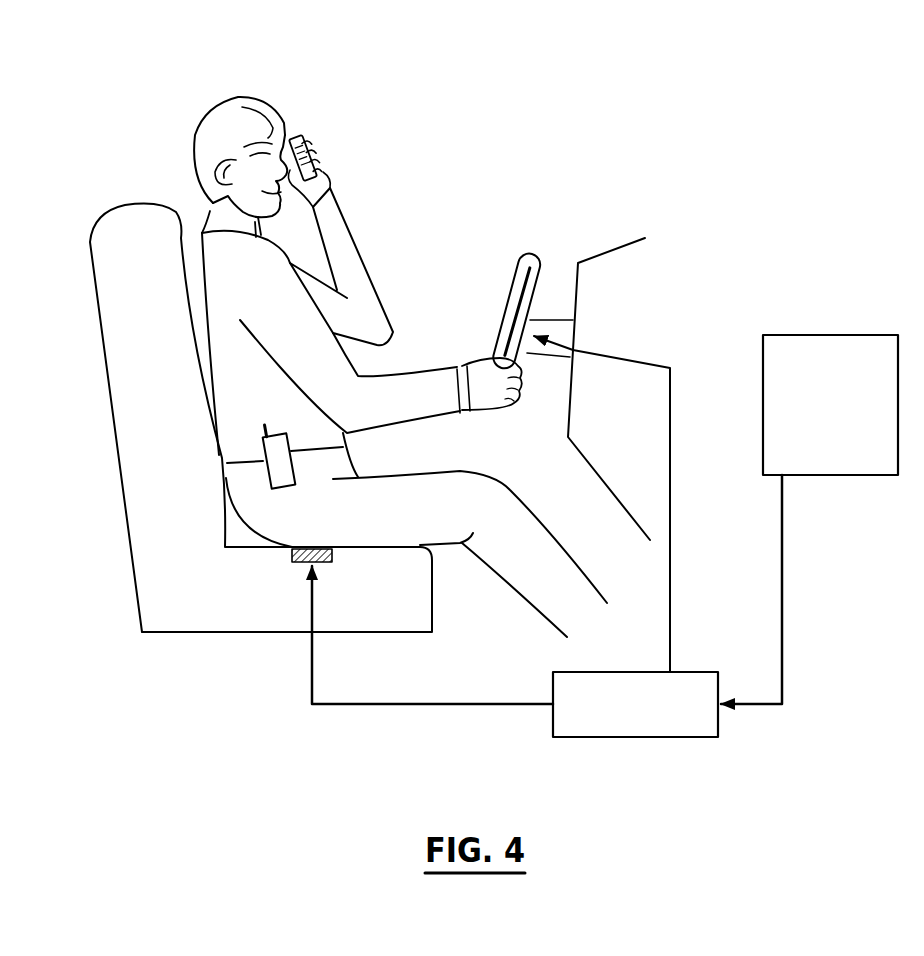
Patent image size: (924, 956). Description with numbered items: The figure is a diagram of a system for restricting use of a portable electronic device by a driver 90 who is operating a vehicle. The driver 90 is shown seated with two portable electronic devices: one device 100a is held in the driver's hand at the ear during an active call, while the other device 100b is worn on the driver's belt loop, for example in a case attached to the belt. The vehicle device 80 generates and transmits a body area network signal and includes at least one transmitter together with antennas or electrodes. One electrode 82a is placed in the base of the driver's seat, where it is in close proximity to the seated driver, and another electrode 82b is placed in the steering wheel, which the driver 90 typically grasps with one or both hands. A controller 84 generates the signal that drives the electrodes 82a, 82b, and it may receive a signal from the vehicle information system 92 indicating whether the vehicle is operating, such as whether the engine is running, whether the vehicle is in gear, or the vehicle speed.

The driver 90 is at (258, 88).
The portable electronic device 100a is at (305, 125).
The portable electronic device 100b is at (298, 494).
The electrode 82b is at (523, 305).
The electrode 82a is at (288, 567).
The controller 84 is at (620, 737).
The vehicle information system 92 is at (842, 477).
The vehicle device 80 is at (748, 773).